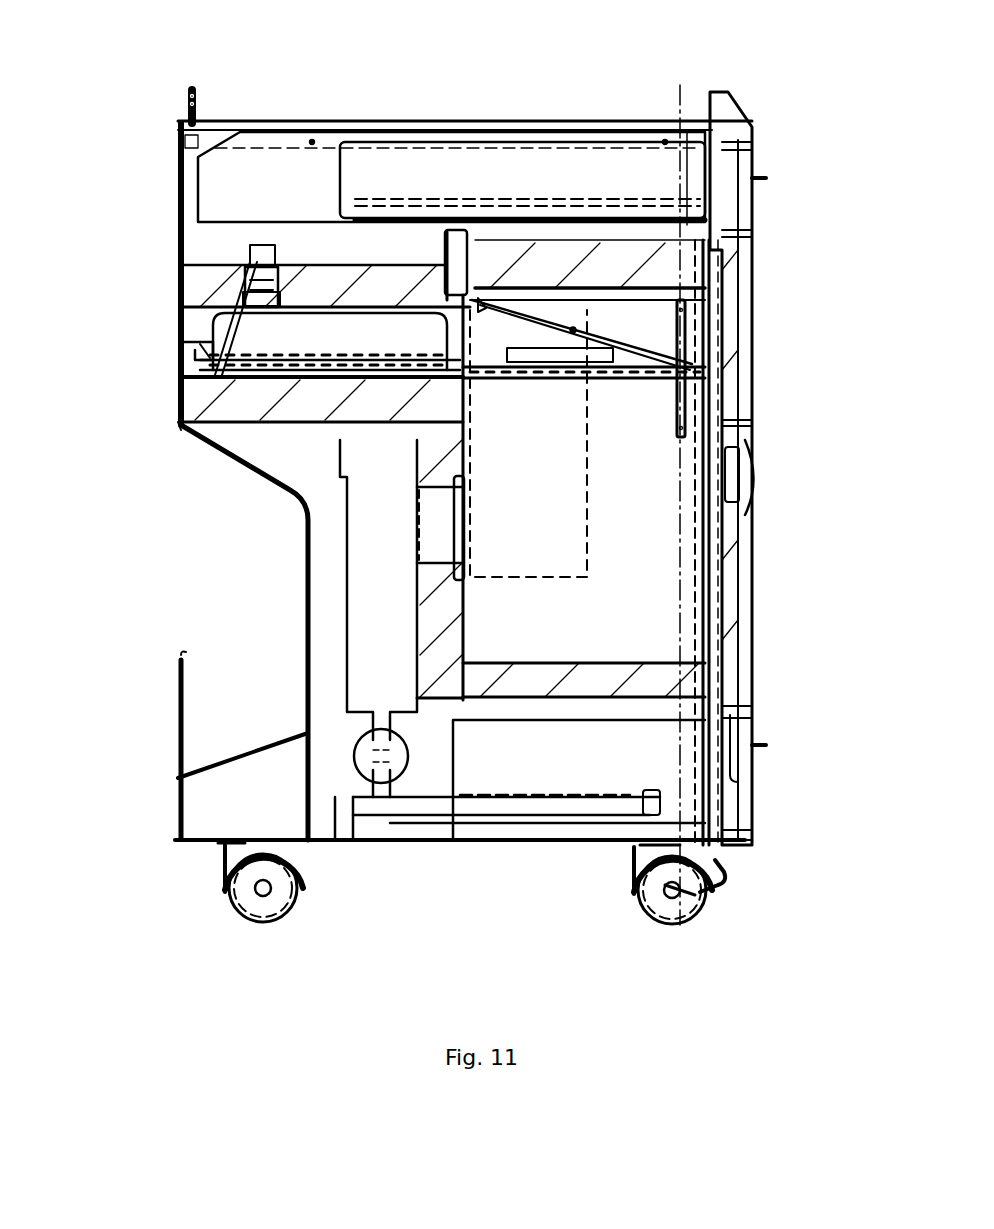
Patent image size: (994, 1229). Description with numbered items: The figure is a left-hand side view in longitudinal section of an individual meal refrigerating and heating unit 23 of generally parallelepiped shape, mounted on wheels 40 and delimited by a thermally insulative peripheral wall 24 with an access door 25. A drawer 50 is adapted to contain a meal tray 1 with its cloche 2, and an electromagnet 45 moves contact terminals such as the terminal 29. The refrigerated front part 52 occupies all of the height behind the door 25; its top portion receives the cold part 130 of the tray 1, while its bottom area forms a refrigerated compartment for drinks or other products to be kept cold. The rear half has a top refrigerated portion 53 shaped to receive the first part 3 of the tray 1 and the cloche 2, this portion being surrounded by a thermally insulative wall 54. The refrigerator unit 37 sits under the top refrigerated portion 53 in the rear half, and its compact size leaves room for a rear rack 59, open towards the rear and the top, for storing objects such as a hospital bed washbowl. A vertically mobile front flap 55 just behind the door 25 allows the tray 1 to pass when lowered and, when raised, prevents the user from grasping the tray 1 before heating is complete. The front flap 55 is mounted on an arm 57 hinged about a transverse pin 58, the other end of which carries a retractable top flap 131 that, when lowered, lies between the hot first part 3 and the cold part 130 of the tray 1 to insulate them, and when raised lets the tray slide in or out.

The meal tray 1 is at (319, 378).
The cloche 2 is at (255, 337).
The first part of the tray 3 is at (178, 430).
The individual unit 23 is at (490, 858).
The thermally insulative peripheral wall 24 is at (432, 613).
The door 25 is at (743, 352).
The contact terminal 29 is at (250, 302).
The refrigerator unit 37 is at (377, 557).
The wheels 40 is at (277, 903).
The electromagnet 45 is at (262, 262).
The drawer 50 is at (530, 163).
The front part 52 is at (647, 627).
The top refrigerated portion 53 is at (215, 341).
The thermally insulative wall 54 is at (280, 403).
The front flap 55 is at (675, 407).
The arm 57 is at (523, 315).
The transverse pin 58 is at (575, 333).
The rear rack 59 is at (232, 740).
The cold part of the tray 130 is at (617, 377).
The retractable top flap 131 is at (488, 237).